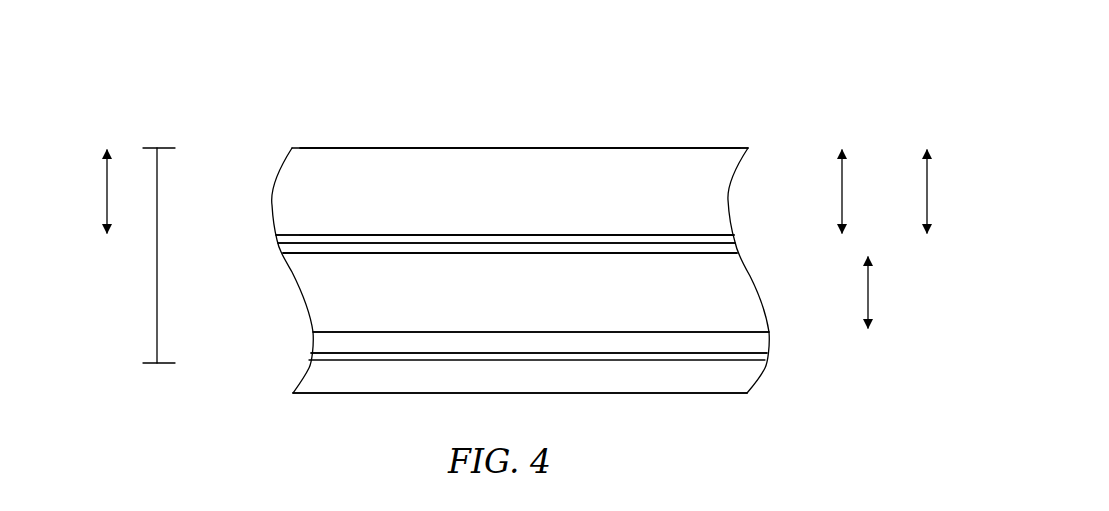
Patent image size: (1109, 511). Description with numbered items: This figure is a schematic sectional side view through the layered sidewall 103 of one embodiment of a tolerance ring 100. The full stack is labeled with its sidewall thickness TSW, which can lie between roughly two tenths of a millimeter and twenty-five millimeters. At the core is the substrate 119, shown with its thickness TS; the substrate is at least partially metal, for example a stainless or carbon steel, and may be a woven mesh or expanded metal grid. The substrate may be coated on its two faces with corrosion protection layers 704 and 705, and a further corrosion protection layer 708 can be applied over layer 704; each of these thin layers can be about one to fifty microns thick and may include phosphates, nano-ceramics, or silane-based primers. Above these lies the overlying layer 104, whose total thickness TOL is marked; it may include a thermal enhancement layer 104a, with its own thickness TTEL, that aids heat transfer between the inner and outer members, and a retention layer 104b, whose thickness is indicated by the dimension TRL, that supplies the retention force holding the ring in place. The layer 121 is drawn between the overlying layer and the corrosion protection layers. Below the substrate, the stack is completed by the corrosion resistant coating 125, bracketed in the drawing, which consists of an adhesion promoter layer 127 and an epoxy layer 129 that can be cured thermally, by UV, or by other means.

The tolerance ring 100 is at (770, 78).
The sidewall 103 is at (748, 148).
The overlying layer 104 is at (275, 180).
The thermal enhancement layer 104a is at (330, 163).
The retention layer 104b is at (692, 197).
The first adhesive layer 121 is at (275, 228).
The corrosion protection layer 708 is at (735, 238).
The corrosion protection layer 704 is at (737, 253).
The substrate 119 is at (298, 282).
The corrosion protection layer 705 is at (770, 335).
The adhesion promoter layer 127 is at (308, 352).
The epoxy layer 129 is at (298, 380).
The corrosion resistant coating 125 is at (777, 352).
The thickness of release layer TRL is at (105, 178).
The sidewall thickness TSW is at (157, 312).
The thermal enhancement layer thickness TTEL is at (843, 193).
The overlying layer thickness TOL is at (928, 180).
The substrate thickness TS is at (869, 300).